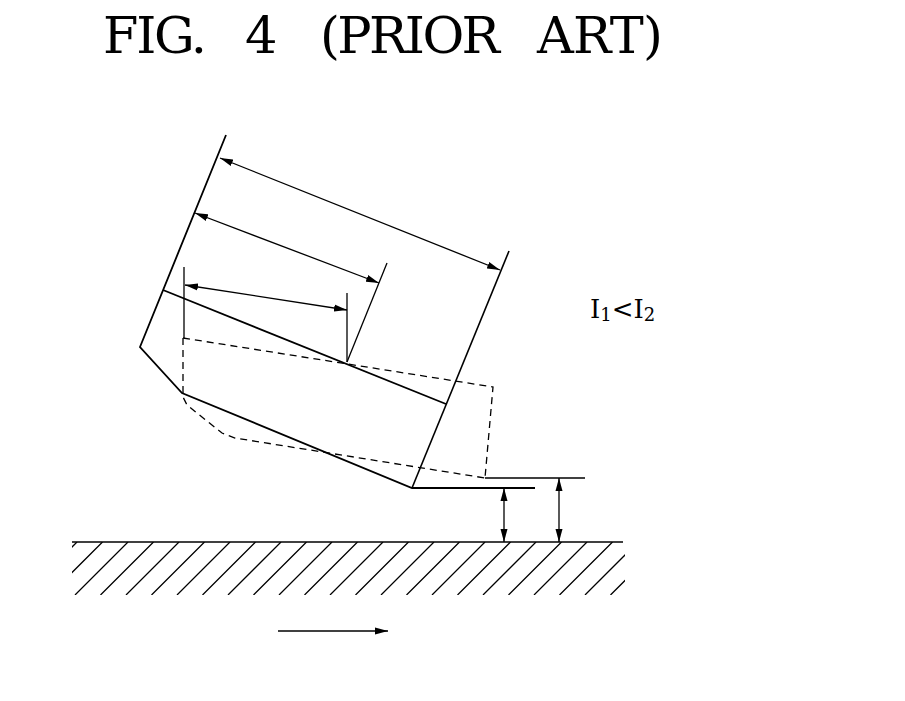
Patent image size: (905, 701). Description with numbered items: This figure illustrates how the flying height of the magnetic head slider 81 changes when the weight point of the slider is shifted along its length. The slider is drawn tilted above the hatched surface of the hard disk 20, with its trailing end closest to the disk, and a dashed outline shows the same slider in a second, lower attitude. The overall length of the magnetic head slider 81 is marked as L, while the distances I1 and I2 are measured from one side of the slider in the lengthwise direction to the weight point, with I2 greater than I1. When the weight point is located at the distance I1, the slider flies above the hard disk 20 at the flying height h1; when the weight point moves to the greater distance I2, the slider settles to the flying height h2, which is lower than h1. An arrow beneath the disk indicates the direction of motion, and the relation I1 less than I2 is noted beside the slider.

The magnetic head slider 81 is at (163, 362).
The hard disk 20 is at (608, 578).
The length of the magnetic head slider L is at (360, 214).
The distance from one side of the slider to the weight point I1 is at (265, 314).
The distance from one side of the slider to the weight point I2 is at (291, 287).
The flying height h1 is at (575, 510).
The flying height h2 is at (521, 515).